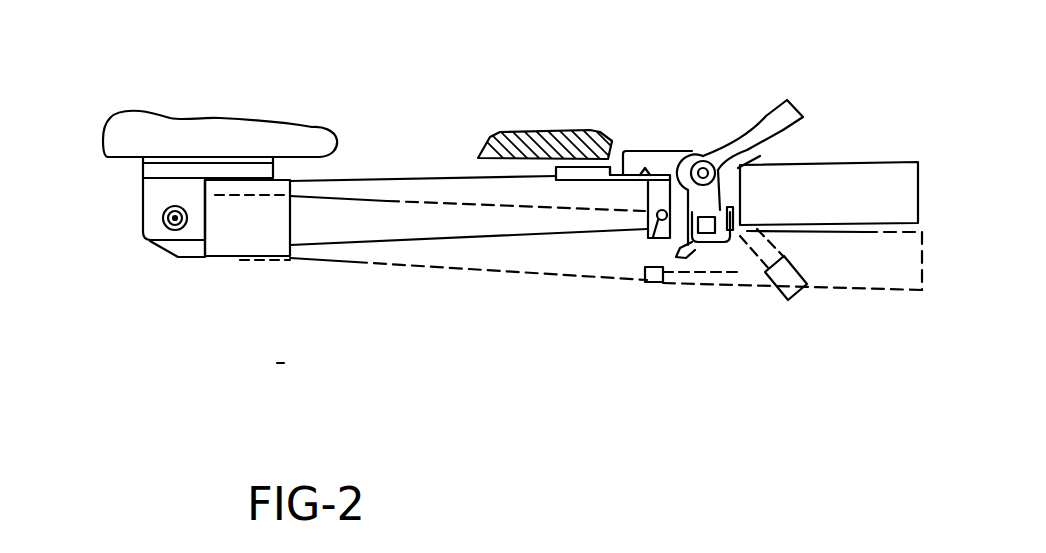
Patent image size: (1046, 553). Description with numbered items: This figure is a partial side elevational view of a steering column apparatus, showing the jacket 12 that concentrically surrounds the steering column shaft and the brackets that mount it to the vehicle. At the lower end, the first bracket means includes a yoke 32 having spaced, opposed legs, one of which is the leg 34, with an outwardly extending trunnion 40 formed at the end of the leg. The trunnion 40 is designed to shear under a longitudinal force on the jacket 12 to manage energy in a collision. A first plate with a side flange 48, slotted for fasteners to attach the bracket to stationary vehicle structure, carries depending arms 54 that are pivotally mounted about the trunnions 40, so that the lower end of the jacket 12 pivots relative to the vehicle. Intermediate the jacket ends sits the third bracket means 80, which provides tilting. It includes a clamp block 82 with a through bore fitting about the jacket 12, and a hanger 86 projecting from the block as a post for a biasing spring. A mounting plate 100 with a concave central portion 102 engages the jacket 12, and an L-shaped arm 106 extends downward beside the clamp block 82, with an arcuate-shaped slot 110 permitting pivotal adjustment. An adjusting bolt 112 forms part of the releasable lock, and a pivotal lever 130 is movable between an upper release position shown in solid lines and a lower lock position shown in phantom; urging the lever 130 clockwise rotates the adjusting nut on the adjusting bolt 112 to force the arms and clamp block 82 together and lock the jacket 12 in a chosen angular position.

The jacket 12 is at (348, 227).
The yoke 32 is at (252, 229).
The leg 34 is at (225, 232).
The trunnion 40 is at (170, 229).
The side flange 48 is at (165, 170).
The depending arm 54 is at (158, 196).
The third bracket means 80 is at (688, 45).
The clamp block 82 is at (650, 211).
The hanger 86 is at (650, 243).
The mounting plate 100 is at (622, 170).
The concave central portion 102 is at (530, 135).
The L-shaped arm 106 is at (663, 151).
The arcuate-shaped slot 110 is at (690, 213).
The adjusting bolt 112 is at (737, 165).
The pivotal lever 130 is at (793, 62).